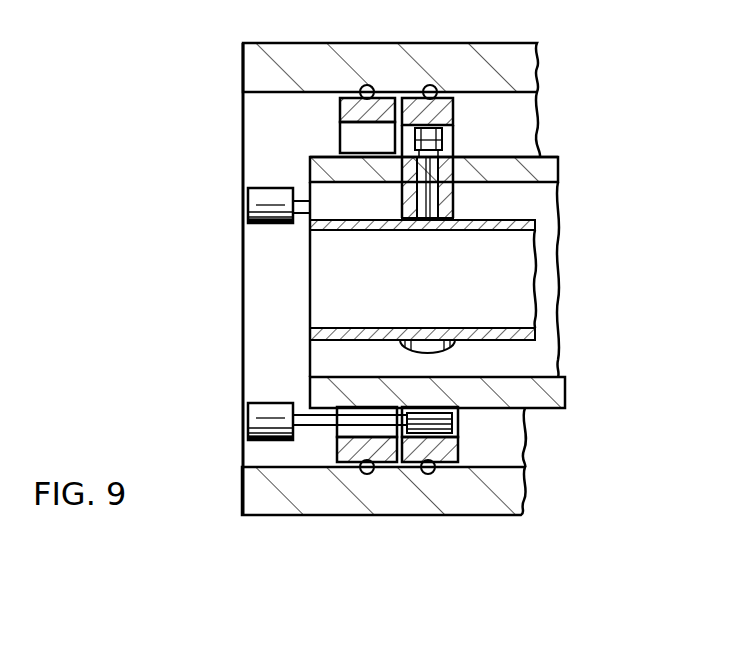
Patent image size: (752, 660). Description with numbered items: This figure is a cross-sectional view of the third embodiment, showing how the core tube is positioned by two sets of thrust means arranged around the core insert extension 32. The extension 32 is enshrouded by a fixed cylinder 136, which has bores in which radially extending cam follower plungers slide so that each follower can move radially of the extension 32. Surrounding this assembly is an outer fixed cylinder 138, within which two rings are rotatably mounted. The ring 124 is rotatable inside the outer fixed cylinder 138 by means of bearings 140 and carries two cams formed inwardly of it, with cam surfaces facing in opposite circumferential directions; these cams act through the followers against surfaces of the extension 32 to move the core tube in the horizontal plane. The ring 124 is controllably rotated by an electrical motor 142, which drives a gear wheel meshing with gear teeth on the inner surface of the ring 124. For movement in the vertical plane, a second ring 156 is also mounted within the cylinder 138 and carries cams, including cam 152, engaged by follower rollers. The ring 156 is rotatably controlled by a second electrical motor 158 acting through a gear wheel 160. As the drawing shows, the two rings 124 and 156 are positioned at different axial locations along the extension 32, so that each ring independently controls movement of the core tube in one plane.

The core insert extension 32 is at (537, 255).
The ring 124 is at (340, 135).
The cylinder 136 is at (556, 158).
The outer fixed cylinder 138 is at (243, 295).
The bearings 140 is at (367, 84).
The electrical motor 142 is at (248, 219).
The cam 152 is at (453, 130).
The ring 156 is at (453, 110).
The electrical motor 158 is at (262, 403).
The gear wheel 160 is at (455, 420).